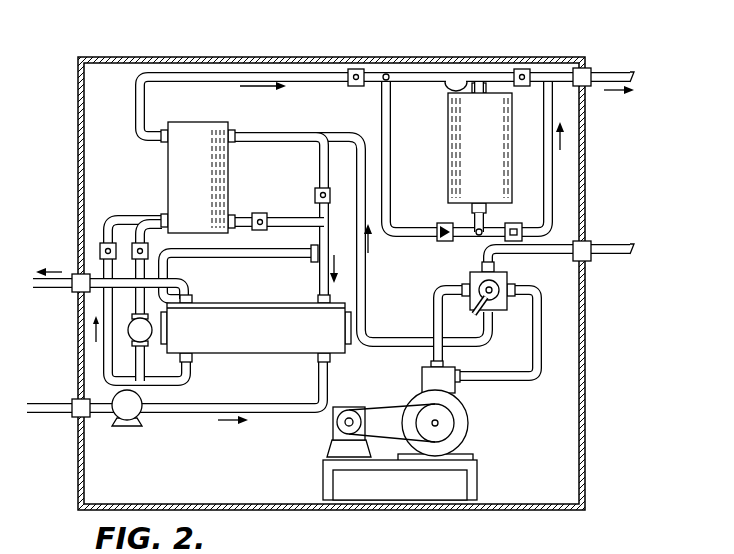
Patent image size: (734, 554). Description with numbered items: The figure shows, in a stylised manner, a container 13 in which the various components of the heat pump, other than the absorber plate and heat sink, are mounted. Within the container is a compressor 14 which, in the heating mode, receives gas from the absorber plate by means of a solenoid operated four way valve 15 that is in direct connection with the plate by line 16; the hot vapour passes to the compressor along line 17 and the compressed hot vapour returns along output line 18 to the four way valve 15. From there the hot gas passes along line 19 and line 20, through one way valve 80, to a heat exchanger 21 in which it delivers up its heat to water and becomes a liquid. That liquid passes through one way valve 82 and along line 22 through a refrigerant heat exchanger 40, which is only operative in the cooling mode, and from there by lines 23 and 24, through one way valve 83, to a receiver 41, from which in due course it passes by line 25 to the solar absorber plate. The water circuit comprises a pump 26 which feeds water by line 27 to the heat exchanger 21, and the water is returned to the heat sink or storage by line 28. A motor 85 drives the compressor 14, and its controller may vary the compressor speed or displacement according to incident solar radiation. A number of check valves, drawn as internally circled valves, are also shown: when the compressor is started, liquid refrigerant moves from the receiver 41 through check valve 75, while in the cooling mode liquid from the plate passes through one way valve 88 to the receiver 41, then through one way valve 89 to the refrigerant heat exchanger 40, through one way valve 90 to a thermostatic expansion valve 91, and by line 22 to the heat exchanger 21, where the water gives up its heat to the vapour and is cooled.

The container 13 is at (104, 57).
The compressor 14 is at (462, 432).
The four way valve 15 is at (516, 277).
The line 16 is at (604, 258).
The line 17 is at (522, 378).
The output line 18 is at (437, 293).
The line 19 is at (360, 283).
The line 20 is at (320, 152).
The heat exchanger 21 is at (271, 323).
The line 22 is at (105, 358).
The line 23 is at (196, 72).
The line 24 is at (448, 84).
The line 25 is at (606, 72).
The pump 26 is at (128, 420).
The line 27 is at (190, 413).
The line 28 is at (187, 297).
The refrigerant heat exchanger 40 is at (204, 163).
The receiver 41 is at (492, 143).
The check valve 75 is at (516, 223).
The one way valve 80 is at (315, 194).
The one way valve 82 is at (103, 243).
The one way valve 83 is at (357, 68).
The motor 85 is at (334, 430).
The one way valve 88 is at (523, 68).
The one way valve 89 is at (443, 223).
The one way valve 90 is at (132, 242).
The thermostatic expansion valve 91 is at (128, 332).